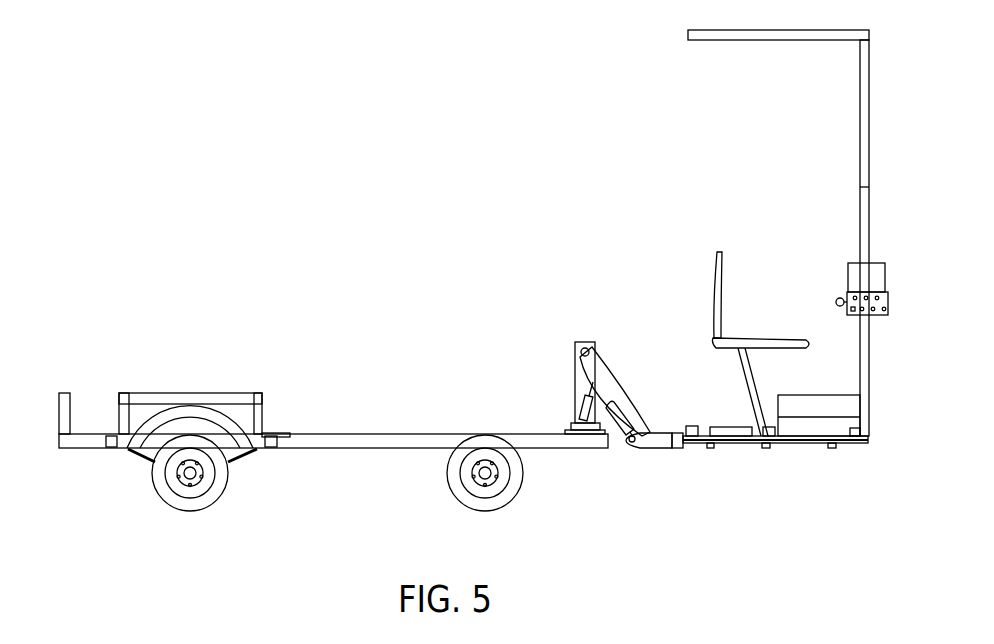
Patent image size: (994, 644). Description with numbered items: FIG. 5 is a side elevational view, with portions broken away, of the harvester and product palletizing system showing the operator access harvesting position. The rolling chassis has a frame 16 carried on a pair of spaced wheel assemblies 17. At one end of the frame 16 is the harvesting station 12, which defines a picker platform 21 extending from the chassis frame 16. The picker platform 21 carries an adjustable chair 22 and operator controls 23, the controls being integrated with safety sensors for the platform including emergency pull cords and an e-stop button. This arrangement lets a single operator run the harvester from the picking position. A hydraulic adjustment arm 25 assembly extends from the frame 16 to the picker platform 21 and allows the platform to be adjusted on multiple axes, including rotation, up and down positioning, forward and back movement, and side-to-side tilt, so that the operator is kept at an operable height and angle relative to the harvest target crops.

The harvesting station 12 is at (673, 184).
The frame 16 is at (316, 460).
The spaced wheel assemblies 17 is at (432, 497).
The picker platform 21 is at (786, 455).
The adjustable chair 22 is at (756, 352).
The operator controls 23 is at (821, 296).
The hydraulic adjustment arm 25 is at (642, 388).